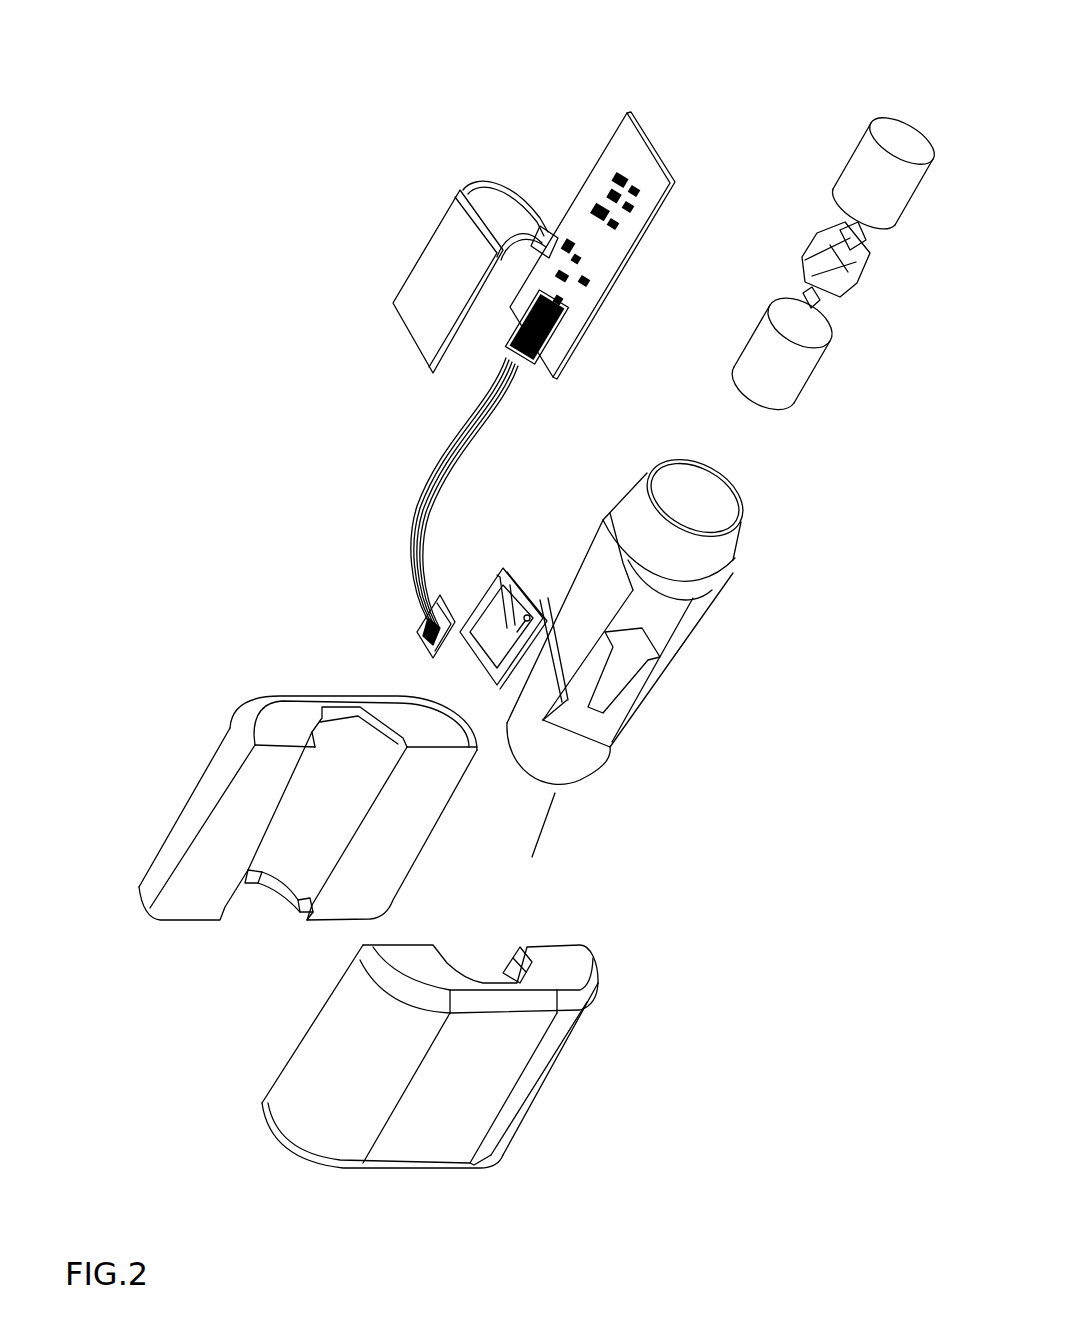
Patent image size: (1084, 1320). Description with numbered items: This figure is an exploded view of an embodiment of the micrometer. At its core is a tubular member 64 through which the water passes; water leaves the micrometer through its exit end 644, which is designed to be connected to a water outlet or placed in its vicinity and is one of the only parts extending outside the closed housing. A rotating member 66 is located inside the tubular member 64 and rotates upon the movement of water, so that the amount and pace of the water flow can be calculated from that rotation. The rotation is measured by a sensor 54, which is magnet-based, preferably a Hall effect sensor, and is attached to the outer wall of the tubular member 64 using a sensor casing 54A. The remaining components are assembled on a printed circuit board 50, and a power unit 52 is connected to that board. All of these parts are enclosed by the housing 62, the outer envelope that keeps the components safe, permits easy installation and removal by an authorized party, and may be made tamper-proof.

The printed circuit board 50 is at (608, 147).
The power unit 52 is at (448, 268).
The sensor 54 is at (427, 627).
The sensor casing 54A is at (490, 597).
The housing 62 is at (323, 1100).
The tubular member 64 is at (696, 676).
The exit end 644 is at (710, 503).
The rotating member 66 is at (857, 293).